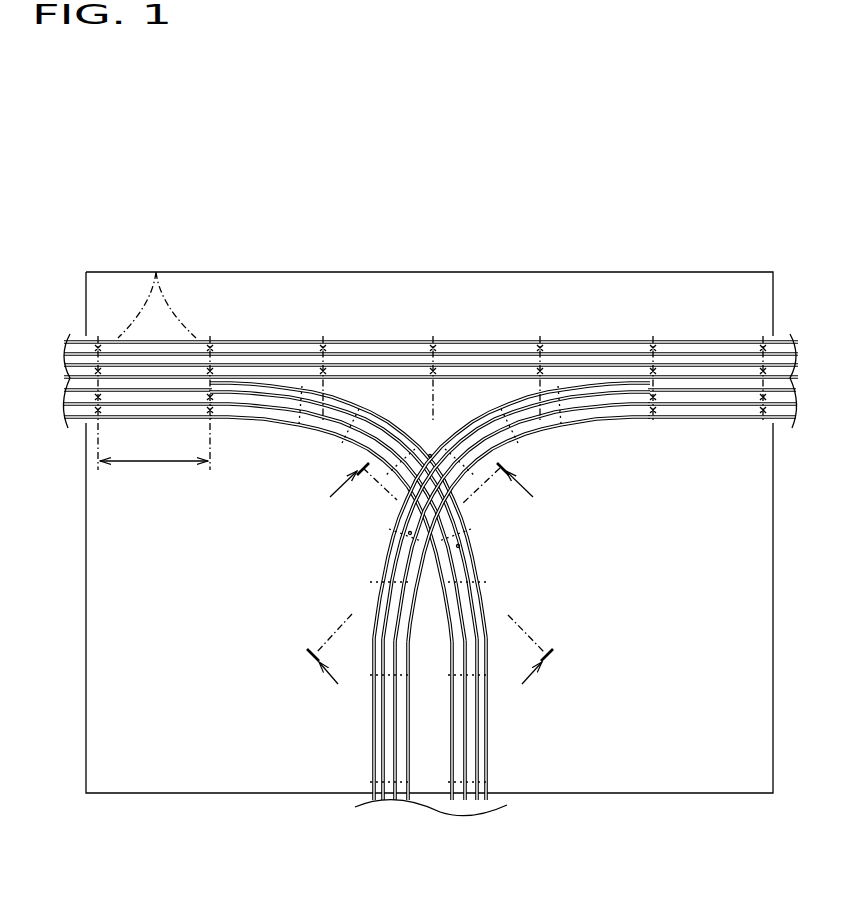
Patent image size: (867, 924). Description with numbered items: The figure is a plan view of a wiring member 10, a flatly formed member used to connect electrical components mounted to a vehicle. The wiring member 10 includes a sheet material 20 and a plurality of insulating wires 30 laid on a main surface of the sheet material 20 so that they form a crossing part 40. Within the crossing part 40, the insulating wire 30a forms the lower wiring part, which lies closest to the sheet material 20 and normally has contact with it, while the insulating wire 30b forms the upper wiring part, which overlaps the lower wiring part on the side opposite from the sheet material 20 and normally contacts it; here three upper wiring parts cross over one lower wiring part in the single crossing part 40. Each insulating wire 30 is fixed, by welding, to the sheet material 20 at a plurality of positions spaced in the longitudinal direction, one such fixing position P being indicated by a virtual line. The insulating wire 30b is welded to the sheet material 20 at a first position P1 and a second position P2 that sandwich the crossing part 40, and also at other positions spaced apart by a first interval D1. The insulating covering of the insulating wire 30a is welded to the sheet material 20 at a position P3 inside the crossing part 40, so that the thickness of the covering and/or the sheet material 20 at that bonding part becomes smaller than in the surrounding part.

The wiring member 10 is at (181, 156).
The sheet material 20 is at (333, 292).
The insulating wires 30 is at (491, 366).
The insulating wire 30a is at (374, 778).
The insulating wire 30b is at (486, 778).
The crossing part 40 is at (386, 498).
The fixing position P is at (156, 268).
The first position P1 is at (414, 462).
The second position P2 is at (461, 546).
The position P3 is at (405, 533).
The first interval D1 is at (154, 446).